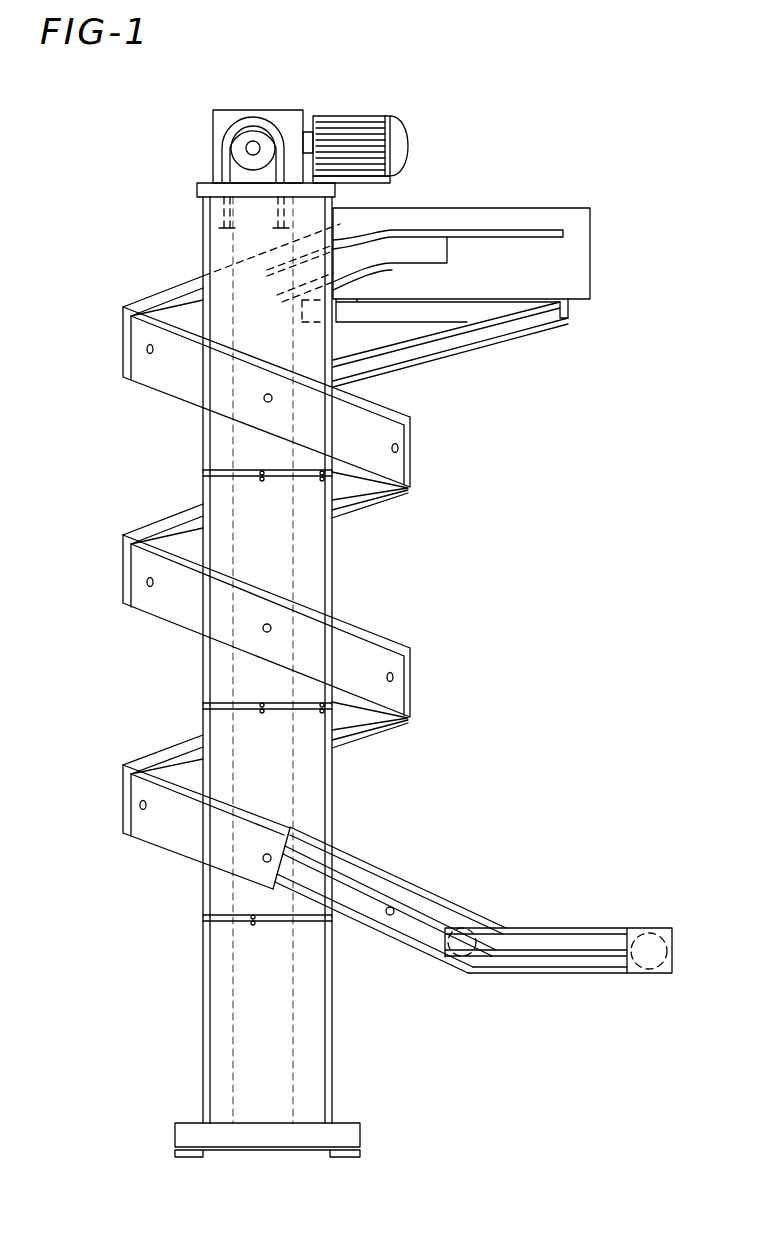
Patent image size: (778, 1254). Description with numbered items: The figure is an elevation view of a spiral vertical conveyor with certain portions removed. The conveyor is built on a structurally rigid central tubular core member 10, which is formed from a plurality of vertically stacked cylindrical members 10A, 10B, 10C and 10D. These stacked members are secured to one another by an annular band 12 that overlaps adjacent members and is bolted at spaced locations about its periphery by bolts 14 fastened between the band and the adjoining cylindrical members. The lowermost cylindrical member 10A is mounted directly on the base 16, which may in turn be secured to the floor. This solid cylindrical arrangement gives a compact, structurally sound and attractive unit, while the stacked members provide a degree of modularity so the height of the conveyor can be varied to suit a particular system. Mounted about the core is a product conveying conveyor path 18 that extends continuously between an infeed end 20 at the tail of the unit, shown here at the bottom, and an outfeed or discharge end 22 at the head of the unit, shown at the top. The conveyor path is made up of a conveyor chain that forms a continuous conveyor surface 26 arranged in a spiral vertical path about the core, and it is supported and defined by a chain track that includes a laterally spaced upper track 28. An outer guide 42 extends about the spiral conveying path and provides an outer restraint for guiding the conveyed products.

The central tubular core member 10 is at (346, 550).
The cylindrical member 10A is at (287, 1016).
The cylindrical member 10B is at (287, 782).
The cylindrical member 10C is at (287, 560).
The cylindrical member 10D is at (287, 333).
The annular band 12 is at (205, 472).
The bolts 14 is at (320, 478).
The base 16 is at (352, 1122).
The product conveying conveyor path 18 is at (396, 640).
The infeed end 20 is at (588, 973).
The outfeed or discharge end 22 is at (548, 208).
The continuous conveyor surface 26 is at (440, 230).
The upper track 28 is at (505, 928).
The outer guide 42 is at (156, 370).